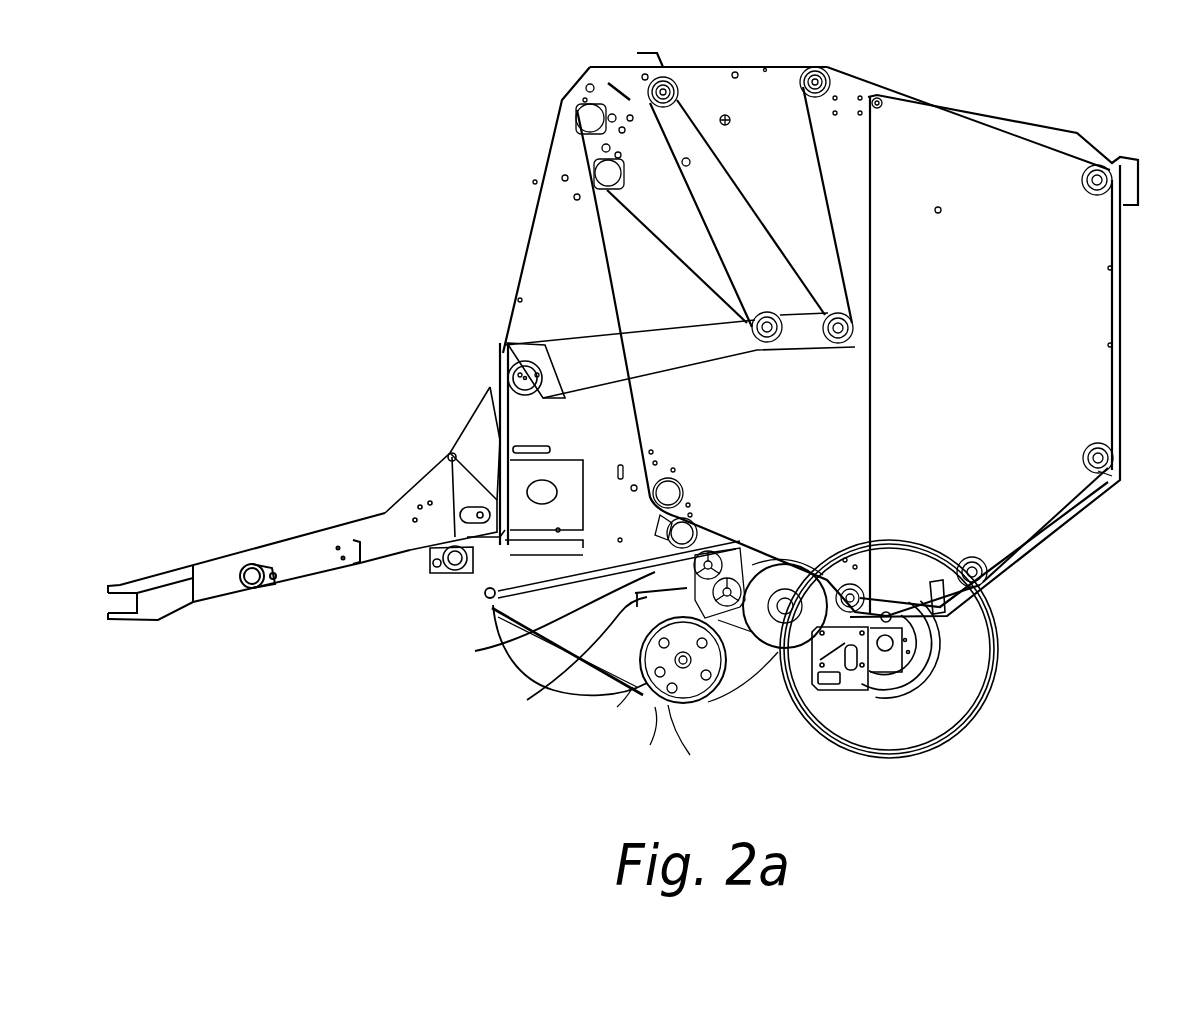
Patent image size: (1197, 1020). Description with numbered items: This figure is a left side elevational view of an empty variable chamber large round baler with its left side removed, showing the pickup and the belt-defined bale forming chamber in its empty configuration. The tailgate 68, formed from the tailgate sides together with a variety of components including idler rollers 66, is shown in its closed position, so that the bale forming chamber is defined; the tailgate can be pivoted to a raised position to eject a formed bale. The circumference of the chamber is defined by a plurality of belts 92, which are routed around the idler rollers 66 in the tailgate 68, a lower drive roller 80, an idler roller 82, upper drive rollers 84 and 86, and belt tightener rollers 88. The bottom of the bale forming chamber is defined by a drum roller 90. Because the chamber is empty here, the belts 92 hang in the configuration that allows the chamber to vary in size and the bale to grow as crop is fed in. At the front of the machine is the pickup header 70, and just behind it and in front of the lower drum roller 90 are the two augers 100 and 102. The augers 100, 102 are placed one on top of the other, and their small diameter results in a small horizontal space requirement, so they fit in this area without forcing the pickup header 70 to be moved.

The idler rollers 66 is at (1093, 181).
The tailgate 68 is at (1075, 550).
The pickup header 70 is at (645, 720).
The lower drive roller 80 is at (673, 493).
The idler roller 82 is at (663, 90).
The upper drive roller 84 is at (583, 113).
The upper drive roller 86 is at (602, 178).
The belt tightener rollers 88 is at (775, 355).
The drum roller 90 is at (778, 640).
The belts 92 is at (1077, 508).
The auger 100 is at (612, 686).
The auger 102 is at (478, 650).